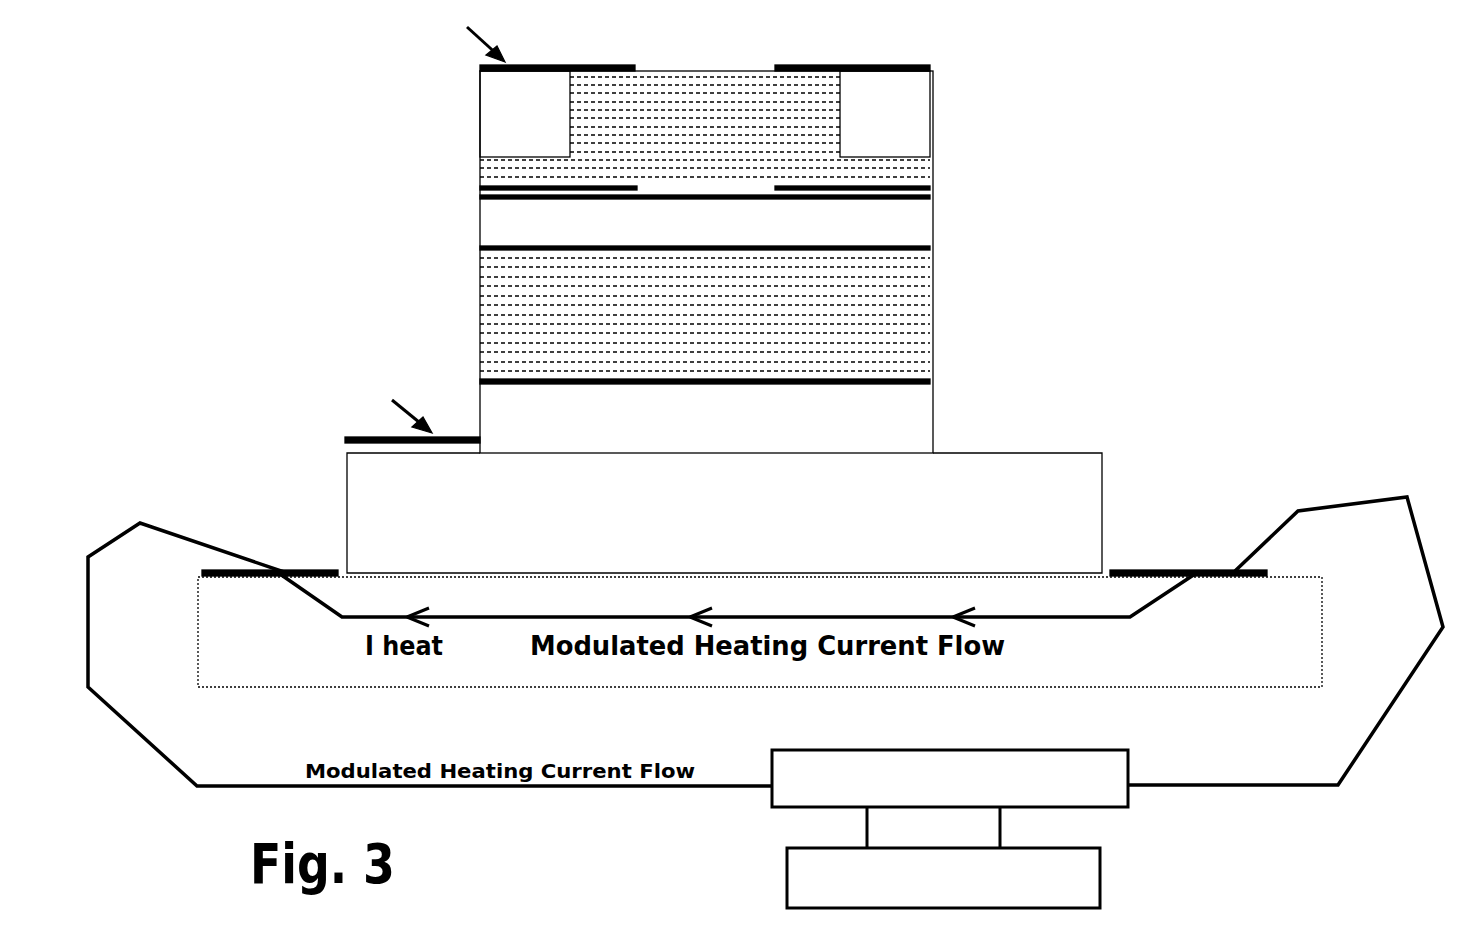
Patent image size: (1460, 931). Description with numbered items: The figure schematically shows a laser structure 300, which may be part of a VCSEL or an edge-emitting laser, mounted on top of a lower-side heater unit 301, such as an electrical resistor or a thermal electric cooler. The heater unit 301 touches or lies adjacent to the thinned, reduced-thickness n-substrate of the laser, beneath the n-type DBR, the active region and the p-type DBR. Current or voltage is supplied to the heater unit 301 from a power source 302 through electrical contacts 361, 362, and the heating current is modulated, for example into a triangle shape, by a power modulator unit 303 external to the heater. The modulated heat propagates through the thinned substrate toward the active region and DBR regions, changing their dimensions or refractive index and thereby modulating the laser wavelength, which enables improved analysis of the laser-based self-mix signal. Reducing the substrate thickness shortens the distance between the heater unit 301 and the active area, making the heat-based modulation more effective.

The laser structure 300 is at (1266, 118).
The lower-side heater unit 301 is at (760, 632).
The power source 302 is at (943, 878).
The power modulator unit 303 is at (950, 778).
The electrical contact 361 is at (1158, 562).
The electrical contact 362 is at (313, 567).